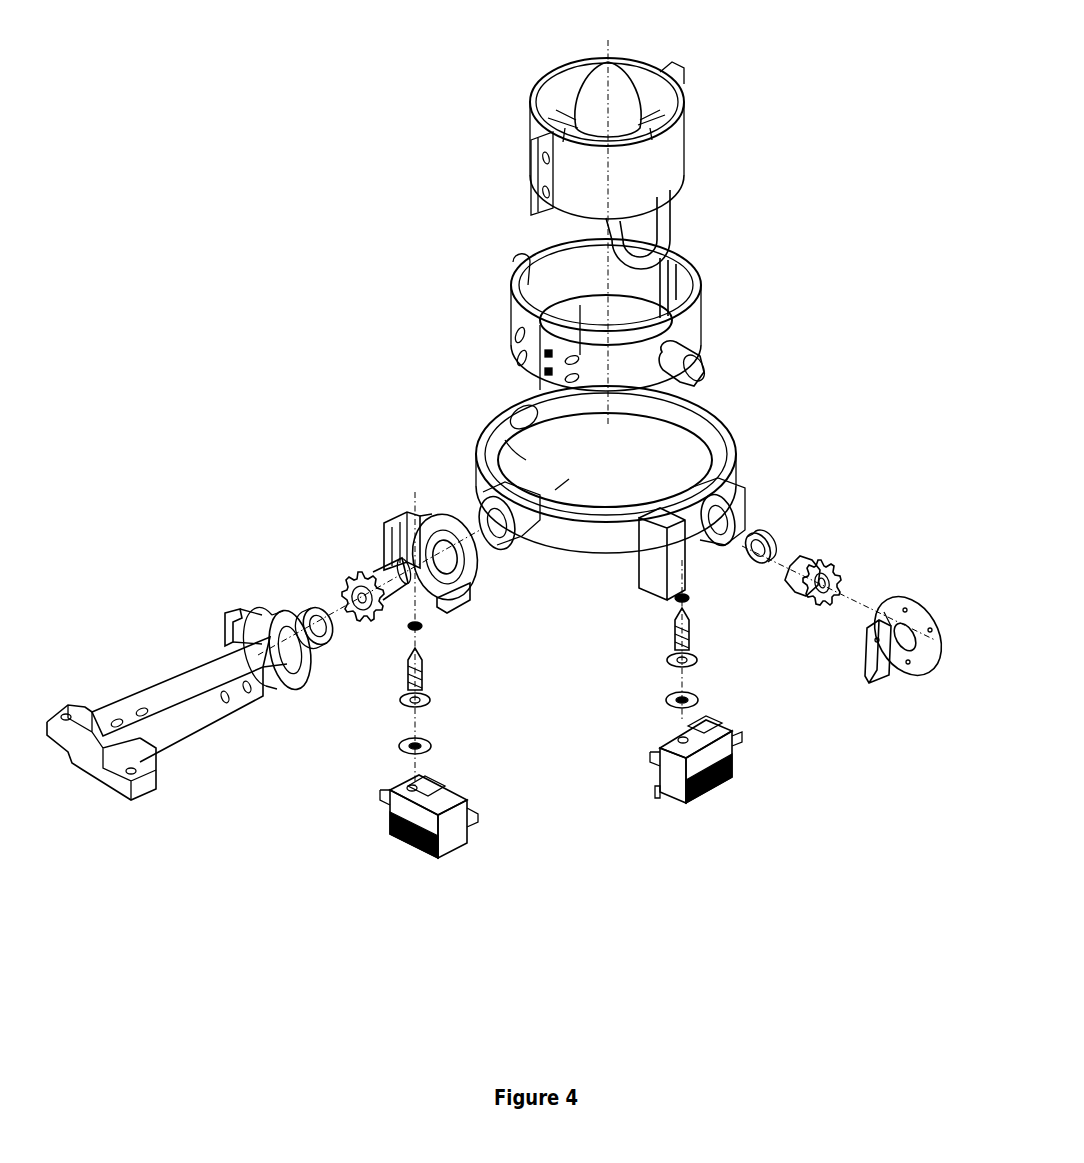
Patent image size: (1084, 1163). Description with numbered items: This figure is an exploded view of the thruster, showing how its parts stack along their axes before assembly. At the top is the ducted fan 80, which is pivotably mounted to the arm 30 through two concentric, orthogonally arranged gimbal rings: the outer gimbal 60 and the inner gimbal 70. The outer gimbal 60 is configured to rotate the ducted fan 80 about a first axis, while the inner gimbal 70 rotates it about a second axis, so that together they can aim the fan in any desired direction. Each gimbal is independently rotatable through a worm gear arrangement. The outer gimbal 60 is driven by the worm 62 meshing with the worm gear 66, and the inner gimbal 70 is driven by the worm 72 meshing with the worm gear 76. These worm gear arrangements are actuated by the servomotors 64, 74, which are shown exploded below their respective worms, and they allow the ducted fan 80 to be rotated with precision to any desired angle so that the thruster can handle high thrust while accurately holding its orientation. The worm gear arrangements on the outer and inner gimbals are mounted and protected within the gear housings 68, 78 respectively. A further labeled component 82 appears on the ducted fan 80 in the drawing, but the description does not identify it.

The arm 30 is at (190, 680).
The outer gimbal 60 is at (487, 407).
The worm 62 is at (404, 678).
The servomotor 64 is at (392, 808).
The worm gear 66 is at (375, 578).
The gear housing 68 is at (405, 518).
The inner gimbal 70 is at (514, 310).
The worm 72 is at (673, 638).
The servomotor 74 is at (660, 790).
The worm gear 76 is at (809, 560).
The gear housing 78 is at (917, 598).
The ducted fan 80 is at (530, 66).
The mounting tab 82 is at (533, 162).